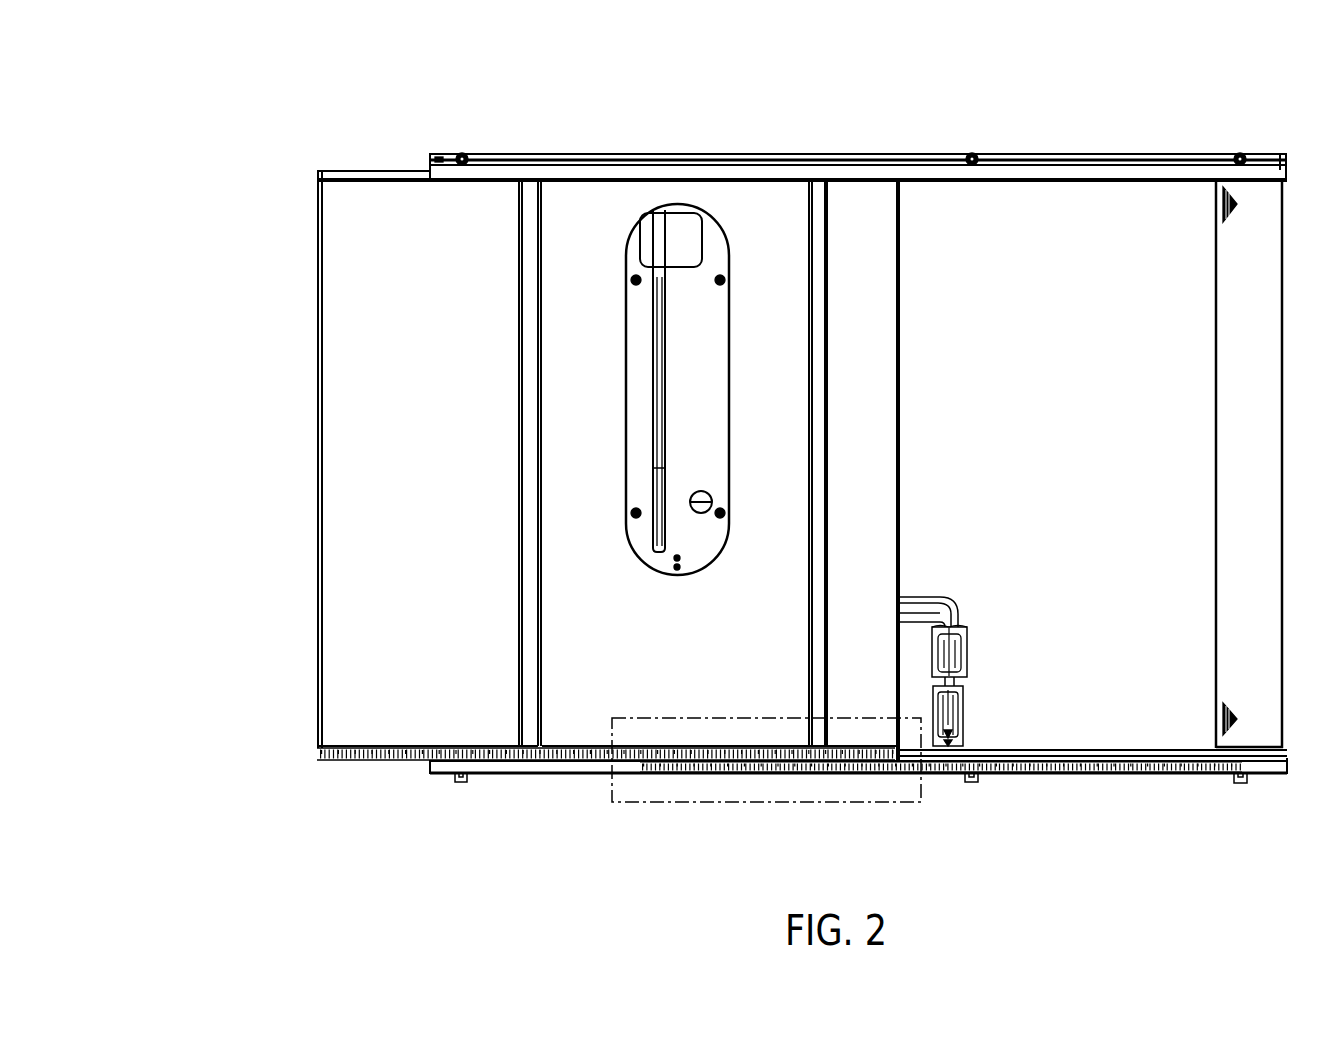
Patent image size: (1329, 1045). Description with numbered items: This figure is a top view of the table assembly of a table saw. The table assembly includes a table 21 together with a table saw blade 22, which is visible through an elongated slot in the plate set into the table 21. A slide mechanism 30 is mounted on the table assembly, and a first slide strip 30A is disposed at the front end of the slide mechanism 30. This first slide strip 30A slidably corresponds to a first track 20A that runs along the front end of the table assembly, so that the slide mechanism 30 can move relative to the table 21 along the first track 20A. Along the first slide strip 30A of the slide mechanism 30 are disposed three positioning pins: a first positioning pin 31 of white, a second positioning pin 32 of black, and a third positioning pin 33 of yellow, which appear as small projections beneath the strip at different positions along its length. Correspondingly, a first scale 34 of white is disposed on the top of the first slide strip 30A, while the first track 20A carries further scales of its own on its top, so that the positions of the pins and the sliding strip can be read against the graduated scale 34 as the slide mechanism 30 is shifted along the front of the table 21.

The table 21 is at (368, 296).
The table saw blade 22 is at (659, 344).
The first track 20A is at (330, 758).
The first slide strip 30A is at (522, 765).
The slide mechanism 30 is at (858, 477).
The first positioning pin 31 is at (1240, 783).
The second positioning pin 32 is at (965, 783).
The third positioning pin 33 is at (460, 782).
The first scale 34 is at (1115, 772).